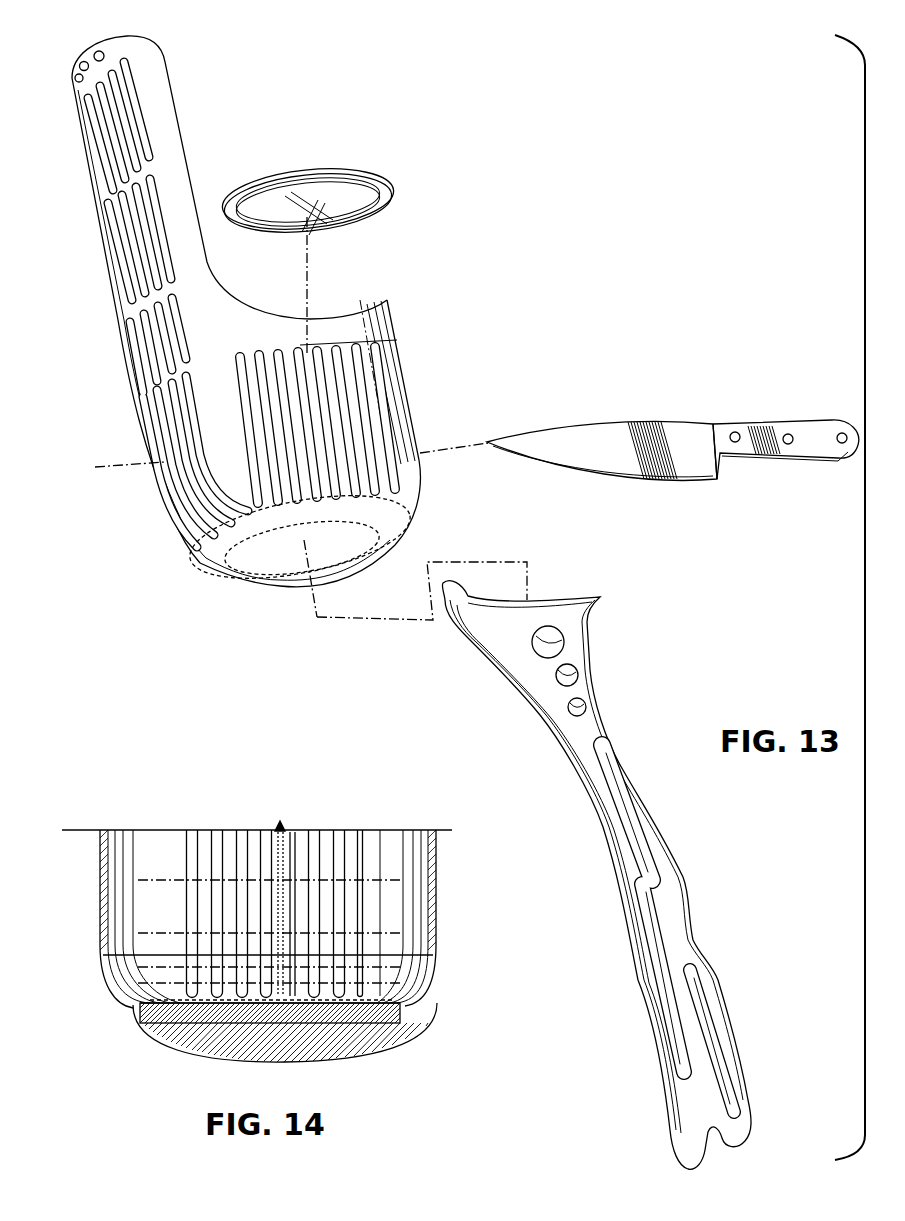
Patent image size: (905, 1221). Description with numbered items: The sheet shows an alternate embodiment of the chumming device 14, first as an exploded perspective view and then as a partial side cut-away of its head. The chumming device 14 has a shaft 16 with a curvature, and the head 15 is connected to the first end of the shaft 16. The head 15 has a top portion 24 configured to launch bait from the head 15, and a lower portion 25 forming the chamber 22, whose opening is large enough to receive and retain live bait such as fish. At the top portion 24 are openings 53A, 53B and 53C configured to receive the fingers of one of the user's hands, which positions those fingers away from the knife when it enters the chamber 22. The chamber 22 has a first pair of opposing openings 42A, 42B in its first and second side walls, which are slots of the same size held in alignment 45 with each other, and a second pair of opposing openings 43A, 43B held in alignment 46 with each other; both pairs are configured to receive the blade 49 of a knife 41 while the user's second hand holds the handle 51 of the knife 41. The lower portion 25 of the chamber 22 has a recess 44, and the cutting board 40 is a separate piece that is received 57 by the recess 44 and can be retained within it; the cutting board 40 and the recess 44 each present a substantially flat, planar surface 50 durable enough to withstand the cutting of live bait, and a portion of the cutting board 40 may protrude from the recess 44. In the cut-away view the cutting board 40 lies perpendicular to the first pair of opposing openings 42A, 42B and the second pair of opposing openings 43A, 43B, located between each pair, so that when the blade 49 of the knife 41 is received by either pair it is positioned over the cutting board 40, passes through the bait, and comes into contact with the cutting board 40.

In FIG. 13, the chumming device 14 is at (515, 205).
In FIG. 13, the head 15 is at (120, 322).
In FIG. 14, the head 15 is at (437, 876).
In FIG. 13, the shaft 16 is at (600, 712).
In FIG. 13, the chamber 22 is at (375, 392).
In FIG. 14, the chamber 22 is at (345, 860).
In FIG. 13, the top portion 24 is at (135, 47).
In FIG. 13, the lower portion 25 is at (195, 552).
In FIG. 14, the lower portion 25 is at (434, 922).
In FIG. 13, the cutting board 40 is at (345, 186).
In FIG. 14, the cutting board 40 is at (195, 1022).
In FIG. 13, the knife 41 is at (770, 455).
In FIG. 13, the first pair of opposing openings (first opening) 42A is at (340, 343).
In FIG. 14, the first pair of opposing openings (first opening) 42A is at (110, 956).
In FIG. 14, the first pair of opposing openings (second opening) 42B is at (430, 956).
In FIG. 13, the second pair of opposing openings (first opening) 43A is at (165, 485).
In FIG. 14, the second pair of opposing openings (first opening) 43A is at (300, 842).
In FIG. 13, the second pair of opposing openings (second opening) 43B is at (420, 460).
In FIG. 14, the second pair of opposing openings (second opening) 43B is at (298, 862).
In FIG. 13, the recess 44 is at (410, 530).
In FIG. 14, the recess 44 is at (150, 1006).
In FIG. 14, the alignment 45 is at (358, 955).
In FIG. 13, the alignment 46 is at (112, 465).
In FIG. 14, the alignment 46 is at (289, 930).
In FIG. 13, the blade 49 is at (585, 437).
In FIG. 13, the flat planar surface 50 is at (287, 176).
In FIG. 14, the flat planar surface 50 is at (385, 1006).
In FIG. 13, the handle 51 is at (822, 441).
In FIG. 13, the opening 53A is at (105, 57).
In FIG. 13, the opening 53B is at (90, 67).
In FIG. 13, the opening 53C is at (84, 80).
In FIG. 13, the received 57 is at (310, 262).